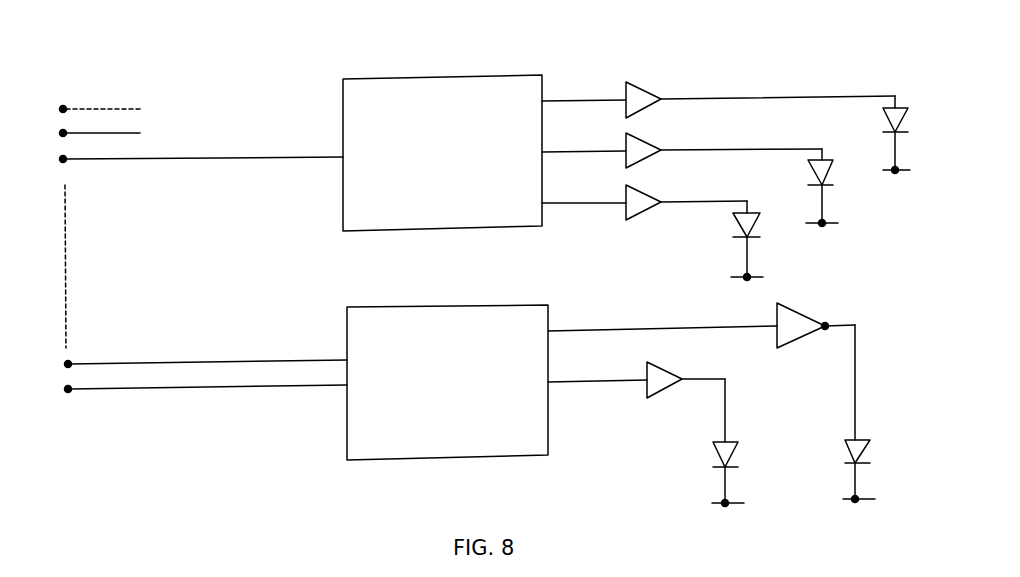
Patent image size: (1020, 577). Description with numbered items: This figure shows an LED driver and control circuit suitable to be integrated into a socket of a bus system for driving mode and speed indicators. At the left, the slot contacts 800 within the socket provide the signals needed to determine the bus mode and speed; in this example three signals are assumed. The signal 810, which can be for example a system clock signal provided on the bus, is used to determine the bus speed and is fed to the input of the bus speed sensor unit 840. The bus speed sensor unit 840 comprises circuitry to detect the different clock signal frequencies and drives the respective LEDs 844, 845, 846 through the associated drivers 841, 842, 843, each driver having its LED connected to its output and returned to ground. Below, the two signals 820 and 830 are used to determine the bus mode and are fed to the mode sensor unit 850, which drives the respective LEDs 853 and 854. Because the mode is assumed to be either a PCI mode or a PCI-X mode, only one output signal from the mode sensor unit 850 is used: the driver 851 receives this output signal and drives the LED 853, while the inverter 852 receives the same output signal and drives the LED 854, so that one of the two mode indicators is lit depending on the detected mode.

The slot contacts 800 is at (72, 91).
The signal 810 is at (165, 158).
The signal 820 is at (108, 363).
The signal 830 is at (108, 389).
The bus speed sensor unit 840 is at (458, 77).
The driver 841 is at (648, 105).
The driver 842 is at (643, 155).
The driver 843 is at (662, 208).
The LED 844 is at (908, 112).
The LED 845 is at (833, 167).
The LED 846 is at (760, 222).
The mode sensor unit 850 is at (550, 430).
The driver 851 is at (658, 362).
The inverter 852 is at (801, 304).
The LED 853 is at (738, 455).
The LED 854 is at (866, 452).